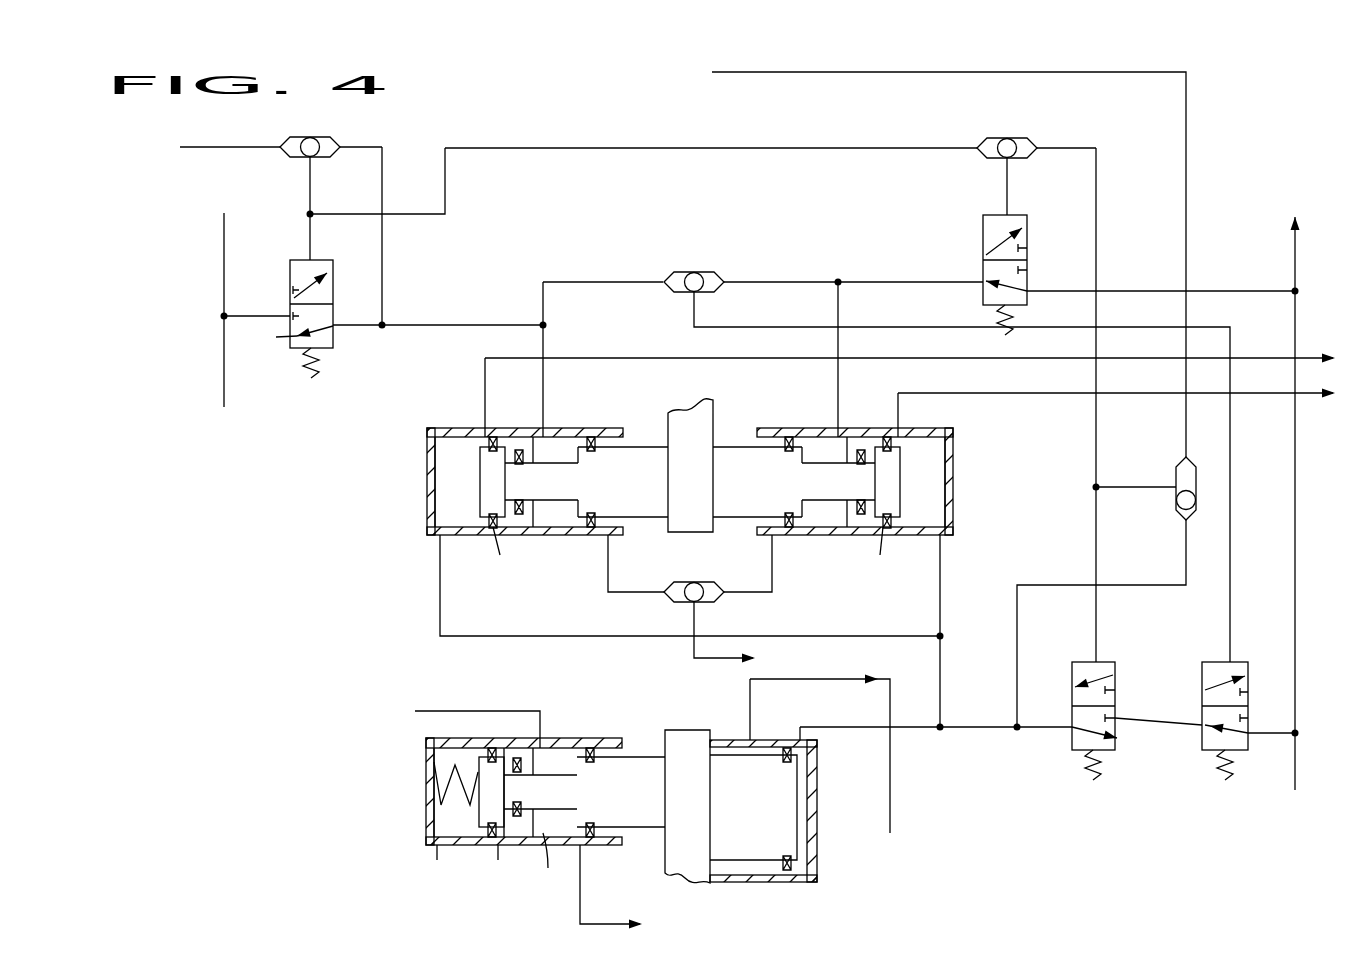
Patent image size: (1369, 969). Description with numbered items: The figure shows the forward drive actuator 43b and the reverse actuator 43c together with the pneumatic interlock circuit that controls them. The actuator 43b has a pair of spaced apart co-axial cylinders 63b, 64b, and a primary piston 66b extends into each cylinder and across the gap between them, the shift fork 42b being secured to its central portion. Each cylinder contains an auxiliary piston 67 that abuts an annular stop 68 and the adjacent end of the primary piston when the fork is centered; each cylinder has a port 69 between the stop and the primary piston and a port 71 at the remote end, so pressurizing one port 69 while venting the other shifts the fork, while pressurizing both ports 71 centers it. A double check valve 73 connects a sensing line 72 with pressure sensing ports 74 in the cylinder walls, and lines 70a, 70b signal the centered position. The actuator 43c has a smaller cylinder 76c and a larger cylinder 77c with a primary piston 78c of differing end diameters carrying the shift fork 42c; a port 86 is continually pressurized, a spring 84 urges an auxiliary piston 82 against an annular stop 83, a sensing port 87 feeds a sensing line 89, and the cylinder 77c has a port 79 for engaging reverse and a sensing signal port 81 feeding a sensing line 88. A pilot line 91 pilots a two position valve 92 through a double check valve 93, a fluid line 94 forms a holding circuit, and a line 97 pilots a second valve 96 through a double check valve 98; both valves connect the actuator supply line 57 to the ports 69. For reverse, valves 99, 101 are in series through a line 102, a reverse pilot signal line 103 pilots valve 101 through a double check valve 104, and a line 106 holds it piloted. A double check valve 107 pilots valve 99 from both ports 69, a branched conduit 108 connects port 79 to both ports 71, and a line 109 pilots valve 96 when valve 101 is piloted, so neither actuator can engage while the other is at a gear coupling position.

The actuator supply line 57 is at (222, 290).
The pilot line 91 is at (190, 147).
The two position valve 92 is at (333, 300).
The double check valve 93 is at (330, 140).
The fluid line 94 is at (383, 228).
The two position pilot operated valve 96 is at (1027, 222).
The line 97 is at (622, 148).
The double check valve 98 is at (990, 140).
The two position pilot operated valve 99 is at (1248, 660).
The two position pilot operated valve 101 is at (1115, 660).
The line 102 is at (1152, 718).
The reverse pilot signal line 103 is at (1188, 102).
The double check valve 104 is at (1170, 457).
The line 106 is at (1130, 585).
The double check valve 107 is at (722, 278).
The branched conduit 108 is at (942, 658).
The line 109 is at (1098, 250).
The port 69 is at (538, 428).
The cylinder 63b is at (583, 428).
The cylinder 64b is at (786, 428).
The shift fork 42b is at (705, 400).
The line 70b is at (945, 360).
The line 70a is at (965, 393).
The port 71 is at (440, 505).
The auxiliary piston 67 is at (540, 497).
The primary piston 66b is at (728, 495).
The annular stop 68 is at (540, 530).
The pressure sensing port 74 is at (608, 537).
The double check valve 73 is at (690, 582).
The sensing line 72 is at (690, 655).
The actuator 43b is at (689, 551).
The port 86 is at (540, 742).
The cylinder 76c is at (590, 736).
The sensing signal port 81 is at (752, 735).
The port 79 is at (792, 737).
The sensing line 88 is at (818, 680).
The spring 84 is at (434, 770).
The auxiliary piston 82 is at (540, 810).
The annular stop 83 is at (545, 869).
The sensing port 87 is at (580, 847).
The sensing line 89 is at (580, 932).
The primary piston 78c is at (775, 797).
The cylinder 77c is at (797, 883).
The shift fork 42c is at (678, 876).
The actuator 43c is at (497, 811).